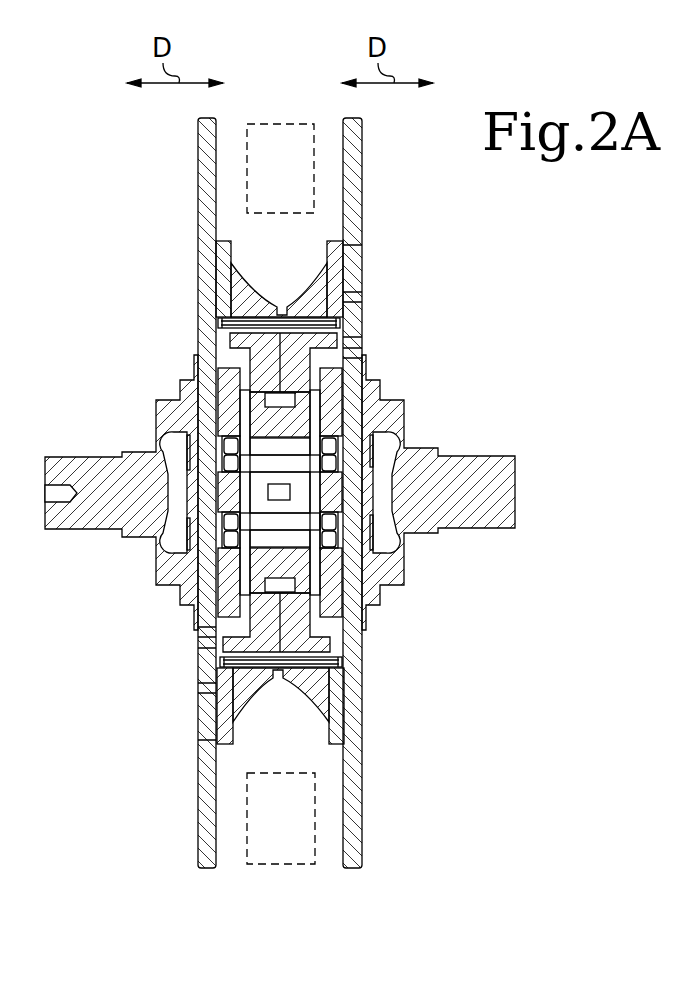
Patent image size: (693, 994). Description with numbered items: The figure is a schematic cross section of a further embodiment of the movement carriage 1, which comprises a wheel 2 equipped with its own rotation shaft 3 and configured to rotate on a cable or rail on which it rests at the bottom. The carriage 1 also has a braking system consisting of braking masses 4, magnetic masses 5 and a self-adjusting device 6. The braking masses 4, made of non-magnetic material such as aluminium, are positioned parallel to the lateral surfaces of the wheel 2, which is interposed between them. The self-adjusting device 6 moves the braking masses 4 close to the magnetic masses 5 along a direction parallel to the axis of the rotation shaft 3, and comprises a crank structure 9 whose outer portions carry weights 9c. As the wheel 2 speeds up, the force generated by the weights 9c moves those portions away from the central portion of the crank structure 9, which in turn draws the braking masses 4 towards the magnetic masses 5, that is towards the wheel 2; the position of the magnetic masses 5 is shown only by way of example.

The movement carriage 1 is at (282, 491).
The wheel 2 is at (318, 288).
The rotation shaft 3 is at (92, 468).
The braking masses 4 is at (363, 196).
The magnetic masses 5 is at (285, 140).
The self-adjusting device 6 is at (232, 452).
The crank structure 9 is at (293, 533).
The weights 9c is at (283, 475).